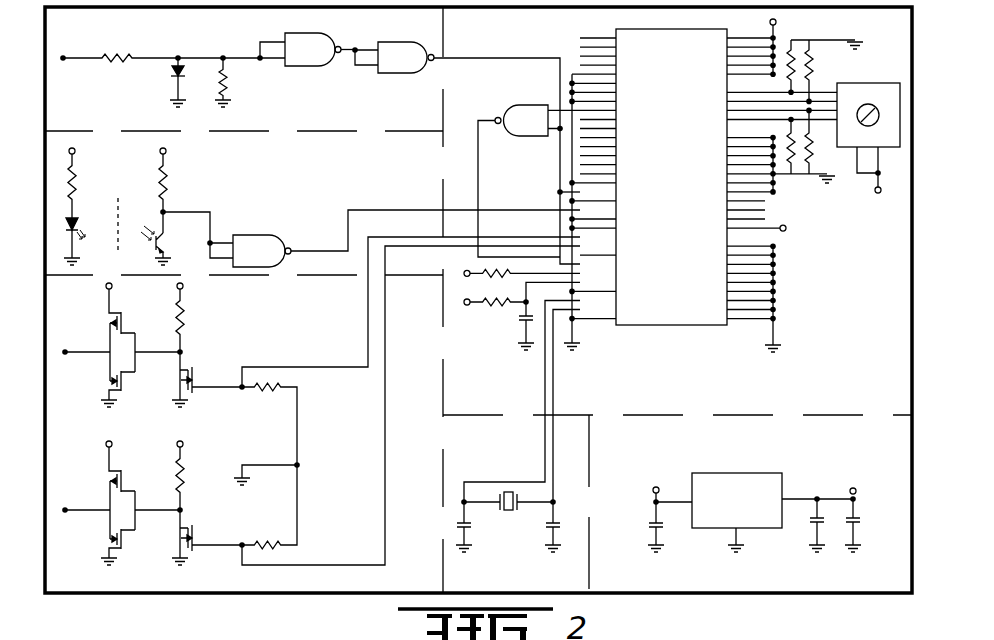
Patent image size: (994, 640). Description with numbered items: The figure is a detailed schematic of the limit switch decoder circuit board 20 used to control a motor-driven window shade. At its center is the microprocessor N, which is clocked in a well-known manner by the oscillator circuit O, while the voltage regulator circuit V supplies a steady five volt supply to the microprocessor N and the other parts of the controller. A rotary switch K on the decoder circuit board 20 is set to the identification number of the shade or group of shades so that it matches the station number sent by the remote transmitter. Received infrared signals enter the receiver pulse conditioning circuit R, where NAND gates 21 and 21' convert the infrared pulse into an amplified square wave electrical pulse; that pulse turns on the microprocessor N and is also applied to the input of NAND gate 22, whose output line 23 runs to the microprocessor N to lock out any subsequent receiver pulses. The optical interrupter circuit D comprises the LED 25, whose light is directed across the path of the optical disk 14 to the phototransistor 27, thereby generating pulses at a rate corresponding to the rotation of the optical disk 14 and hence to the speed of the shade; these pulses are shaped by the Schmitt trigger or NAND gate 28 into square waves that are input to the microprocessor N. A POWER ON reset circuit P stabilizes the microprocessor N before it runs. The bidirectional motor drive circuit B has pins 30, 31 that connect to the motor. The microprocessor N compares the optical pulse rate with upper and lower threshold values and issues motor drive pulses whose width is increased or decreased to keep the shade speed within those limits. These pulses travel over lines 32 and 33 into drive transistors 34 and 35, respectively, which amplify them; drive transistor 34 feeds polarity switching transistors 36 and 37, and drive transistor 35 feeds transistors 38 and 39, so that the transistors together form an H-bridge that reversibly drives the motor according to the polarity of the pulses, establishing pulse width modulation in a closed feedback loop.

The limit switch decoder circuit board 20 is at (722, 594).
The NAND gate 21 is at (307, 67).
The NAND gate 21' is at (466, 153).
The NAND gate 22 is at (522, 115).
The output line 23 is at (480, 196).
The LED 25 is at (80, 219).
The optical disk 14 is at (120, 197).
The phototransistor 27 is at (158, 238).
The Schmitt trigger or NAND gate 28 is at (245, 240).
The pin 30 is at (86, 338).
The pin 31 is at (100, 496).
The line 32 is at (352, 368).
The line 33 is at (385, 561).
The drive transistor 34 is at (198, 369).
The drive transistor 35 is at (198, 527).
The polarity switching transistor 36 is at (115, 311).
The polarity switching transistor 37 is at (107, 384).
The polarity switching transistor 38 is at (115, 469).
The polarity switching transistor 39 is at (107, 542).
The rotary switch K is at (873, 92).
The POWER ON reset circuit P is at (520, 308).
The receiver pulse conditioning circuit R is at (285, 110).
The optical interrupter circuit D is at (236, 178).
The bidirectional motor drive circuit B is at (300, 335).
The microprocessor N is at (651, 382).
The oscillator circuit O is at (515, 457).
The voltage regulator circuit V is at (741, 455).